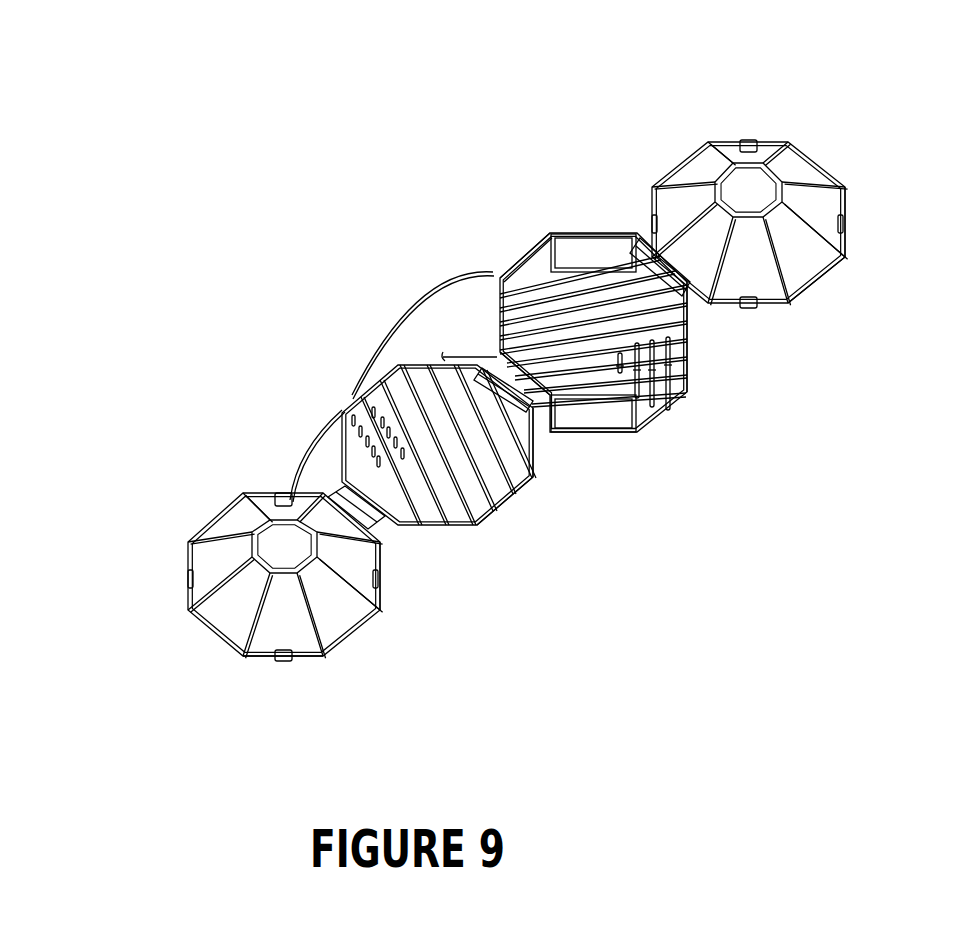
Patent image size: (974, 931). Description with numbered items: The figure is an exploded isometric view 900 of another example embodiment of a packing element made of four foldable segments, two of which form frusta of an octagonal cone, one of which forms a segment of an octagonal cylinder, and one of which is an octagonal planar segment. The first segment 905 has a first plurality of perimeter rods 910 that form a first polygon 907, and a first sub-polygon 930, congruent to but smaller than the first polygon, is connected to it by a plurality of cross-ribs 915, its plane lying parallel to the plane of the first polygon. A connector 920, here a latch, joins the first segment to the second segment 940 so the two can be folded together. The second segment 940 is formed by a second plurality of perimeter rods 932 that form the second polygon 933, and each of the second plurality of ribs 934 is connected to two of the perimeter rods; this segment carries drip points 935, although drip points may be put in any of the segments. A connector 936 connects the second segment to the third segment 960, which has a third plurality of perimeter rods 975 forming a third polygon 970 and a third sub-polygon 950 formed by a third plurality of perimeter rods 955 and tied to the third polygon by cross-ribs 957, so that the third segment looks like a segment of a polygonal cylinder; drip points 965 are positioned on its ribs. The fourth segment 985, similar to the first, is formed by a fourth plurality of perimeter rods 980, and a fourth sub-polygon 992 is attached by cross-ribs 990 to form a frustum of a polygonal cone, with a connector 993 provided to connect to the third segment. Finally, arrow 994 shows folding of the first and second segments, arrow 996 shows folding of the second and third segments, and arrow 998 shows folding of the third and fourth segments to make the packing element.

The exploded isometric view 900 is at (511, 61).
The first segment 905 is at (329, 611).
The first polygon 907 is at (250, 637).
The first plurality of perimeter rods 910 is at (390, 620).
The cross-ribs 915 is at (350, 487).
The connector 920 is at (283, 650).
The first sub-polygon 930 is at (226, 602).
The second plurality of perimeter rods 932 is at (400, 386).
The second polygon 933 is at (464, 480).
The second plurality of ribs 934 is at (399, 432).
The drip points 935 is at (563, 524).
The connector 936 is at (600, 434).
The second segment 940 is at (591, 478).
The third sub-polygon 950 is at (492, 291).
The third plurality of perimeter rods 955 is at (488, 240).
The cross-ribs 957 is at (574, 222).
The third segment 960 is at (734, 400).
The drip points 965 is at (704, 386).
The third polygon 970 is at (762, 340).
The third plurality of perimeter rods 975 is at (664, 447).
The fourth plurality of perimeter rods 980 is at (879, 245).
The fourth segment 985 is at (751, 144).
The cross-ribs 990 is at (778, 239).
The fourth sub-polygon 992 is at (833, 190).
The connector 993 is at (836, 330).
The arrow 994 is at (250, 456).
The arrow 996 is at (403, 329).
The arrow 998 is at (637, 215).